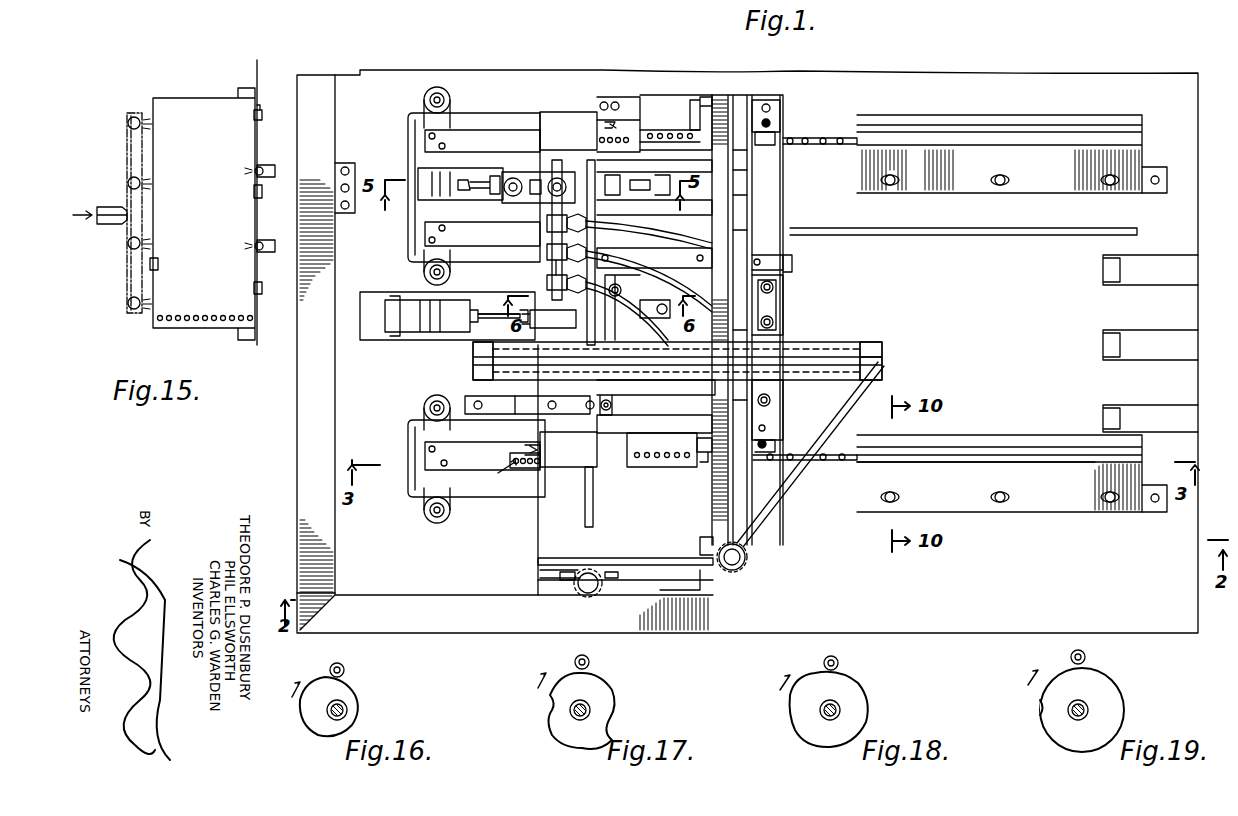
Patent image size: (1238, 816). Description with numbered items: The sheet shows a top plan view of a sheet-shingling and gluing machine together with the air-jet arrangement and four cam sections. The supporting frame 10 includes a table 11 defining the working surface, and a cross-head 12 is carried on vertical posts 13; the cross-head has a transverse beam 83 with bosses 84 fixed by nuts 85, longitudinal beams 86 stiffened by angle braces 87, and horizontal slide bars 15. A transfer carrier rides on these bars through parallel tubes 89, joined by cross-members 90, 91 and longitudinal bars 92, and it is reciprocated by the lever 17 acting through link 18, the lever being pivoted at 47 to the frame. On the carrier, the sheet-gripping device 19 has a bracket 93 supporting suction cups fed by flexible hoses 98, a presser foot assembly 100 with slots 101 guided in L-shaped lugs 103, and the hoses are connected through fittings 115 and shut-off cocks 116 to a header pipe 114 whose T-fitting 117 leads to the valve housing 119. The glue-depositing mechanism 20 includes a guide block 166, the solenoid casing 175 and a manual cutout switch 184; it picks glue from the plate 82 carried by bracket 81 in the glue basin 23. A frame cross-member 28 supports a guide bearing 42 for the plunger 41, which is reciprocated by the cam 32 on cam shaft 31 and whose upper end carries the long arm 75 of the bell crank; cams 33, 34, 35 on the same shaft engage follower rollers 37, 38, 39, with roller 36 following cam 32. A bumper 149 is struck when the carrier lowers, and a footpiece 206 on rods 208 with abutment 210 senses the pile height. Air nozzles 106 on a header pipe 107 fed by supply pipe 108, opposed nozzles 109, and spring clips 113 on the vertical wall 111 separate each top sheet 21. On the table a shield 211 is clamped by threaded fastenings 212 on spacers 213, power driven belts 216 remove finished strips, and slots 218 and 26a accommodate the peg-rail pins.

In FIG. 1, the supporting frame 10 is at (452, 630).
In FIG. 1, the table 11 is at (1057, 72).
In FIG. 1, the cross-head 12 is at (819, 344).
In FIG. 1, the vertical posts 13 is at (738, 552).
In FIG. 1, the slide bars 15 is at (845, 347).
In FIG. 1, the lever 17 is at (402, 344).
In FIG. 1, the link 18 is at (495, 310).
In FIG. 1, the sheet-gripping device 19 is at (766, 446).
In FIG. 1, the glue-depositing mechanism 20 is at (498, 473).
In FIG. 1, the sheet 21 is at (654, 414).
In FIG. 15, the sheet 21 is at (205, 202).
In FIG. 1, the glue basin 23 is at (408, 481).
In FIG. 1, the slot 26a is at (828, 466).
In FIG. 1, the cross-member 28 is at (641, 562).
In FIG. 16, the cam shaft 31 is at (347, 710).
In FIG. 17, the cam shaft 31 is at (590, 710).
In FIG. 18, the cam shaft 31 is at (840, 710).
In FIG. 19, the cam shaft 31 is at (1088, 710).
In FIG. 16, the cam 32 is at (312, 730).
In FIG. 17, the cam 33 is at (570, 737).
In FIG. 18, the cam 34 is at (814, 732).
In FIG. 19, the cam 35 is at (1062, 735).
In FIG. 16, the follower roller 36 is at (344, 670).
In FIG. 17, the follower roller 37 is at (589, 662).
In FIG. 18, the follower roller 38 is at (838, 663).
In FIG. 19, the follower roller 39 is at (1085, 657).
In FIG. 1, the plunger 41 is at (586, 575).
In FIG. 1, the guide bearing 42 is at (602, 572).
In FIG. 1, the pivot 47 is at (404, 290).
In FIG. 1, the long arm 75 is at (553, 587).
In FIG. 1, the bracket 81 is at (424, 404).
In FIG. 1, the plate 82 is at (483, 455).
In FIG. 1, the transverse beam 83 is at (745, 265).
In FIG. 1, the bosses 84 is at (735, 572).
In FIG. 1, the nuts 85 is at (745, 562).
In FIG. 1, the longitudinal beams 86 is at (880, 345).
In FIG. 1, the angle braces 87 is at (775, 503).
In FIG. 1, the tubes 89 is at (684, 348).
In FIG. 1, the cross-member 90 is at (780, 312).
In FIG. 1, the cross-member 91 is at (593, 495).
In FIG. 1, the longitudinal bars 92 is at (654, 313).
In FIG. 1, the bracket 93 is at (772, 300).
In FIG. 1, the flexible hose 98 is at (665, 235).
In FIG. 1, the presser foot assembly 100 is at (694, 463).
In FIG. 1, the slots 101 is at (768, 462).
In FIG. 1, the L-shaped lugs 103 is at (765, 420).
In FIG. 15, the air nozzles 106 is at (128, 124).
In FIG. 1, the header pipe 107 is at (580, 294).
In FIG. 15, the header pipe 107 is at (131, 272).
In FIG. 15, the supply pipe 108 is at (106, 207).
In FIG. 15, the air nozzles 109 is at (262, 165).
In FIG. 1, the vertical wall 111 is at (712, 502).
In FIG. 15, the spring clips 113 is at (270, 112).
In FIG. 1, the header pipe 114 is at (550, 268).
In FIG. 1, the fitting 115 is at (547, 218).
In FIG. 1, the shut-off cock 116 is at (547, 236).
In FIG. 1, the T-fitting 117 is at (514, 178).
In FIG. 1, the valve housing 119 is at (555, 178).
In FIG. 1, the bumper 149 is at (341, 188).
In FIG. 1, the guide block 166 is at (530, 470).
In FIG. 1, the casing 175 is at (567, 470).
In FIG. 1, the manual cutout switch 184 is at (528, 448).
In FIG. 1, the footpiece 206 is at (652, 316).
In FIG. 1, the rods 208 is at (615, 402).
In FIG. 1, the abutment 210 is at (625, 345).
In FIG. 1, the shield 211 is at (1040, 498).
In FIG. 1, the threaded fastenings 212 is at (995, 490).
In FIG. 1, the spacers 213 is at (1152, 512).
In FIG. 1, the power driven belts 216 is at (1150, 410).
In FIG. 1, the slot 218 is at (930, 238).